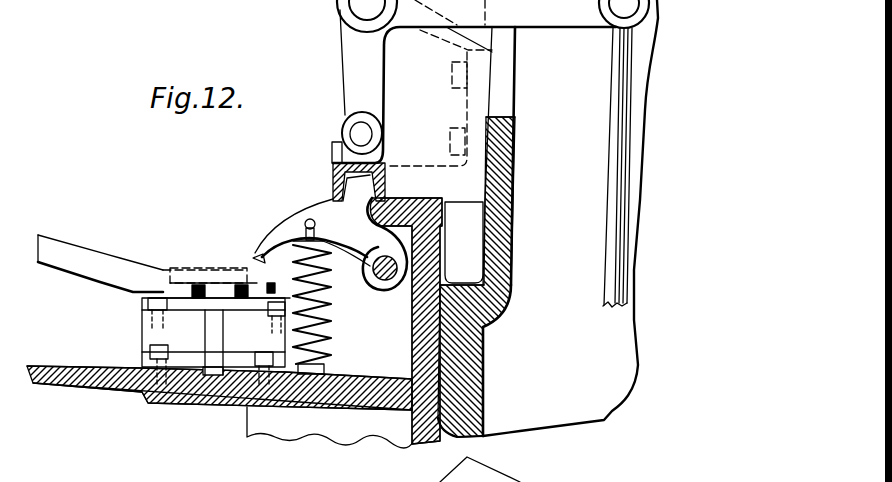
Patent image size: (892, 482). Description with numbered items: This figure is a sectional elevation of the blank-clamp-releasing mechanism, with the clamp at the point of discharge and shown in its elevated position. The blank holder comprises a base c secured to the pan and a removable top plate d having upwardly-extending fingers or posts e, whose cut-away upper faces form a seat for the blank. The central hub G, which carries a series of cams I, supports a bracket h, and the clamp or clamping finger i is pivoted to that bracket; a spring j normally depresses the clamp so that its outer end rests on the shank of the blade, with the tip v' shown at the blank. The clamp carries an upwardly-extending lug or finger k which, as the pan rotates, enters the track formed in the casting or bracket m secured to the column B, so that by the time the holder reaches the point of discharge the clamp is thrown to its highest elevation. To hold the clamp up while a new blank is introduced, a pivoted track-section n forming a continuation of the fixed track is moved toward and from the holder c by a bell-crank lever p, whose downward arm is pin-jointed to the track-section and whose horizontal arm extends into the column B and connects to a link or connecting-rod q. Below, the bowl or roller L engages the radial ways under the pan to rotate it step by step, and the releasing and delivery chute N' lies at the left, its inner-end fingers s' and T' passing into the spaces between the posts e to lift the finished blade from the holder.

The bell-crank lever p is at (375, 80).
The casting or bracket m is at (441, 83).
The track-section n is at (334, 163).
The lug or finger k is at (362, 187).
The column B is at (500, 172).
The cams I is at (447, 204).
The link or connecting-rod q is at (608, 252).
The bracket h is at (406, 321).
The clamp or clamping finger i is at (283, 226).
The lever tip v' is at (268, 269).
The spring j is at (318, 312).
The central hub G is at (412, 353).
The bowl or roller L is at (300, 423).
The removable top plate d is at (185, 303).
The base c is at (261, 343).
The releasing and delivery chute N' is at (164, 270).
The fingers or posts e is at (195, 285).
The finger s' is at (220, 265).
The finger T' is at (251, 262).